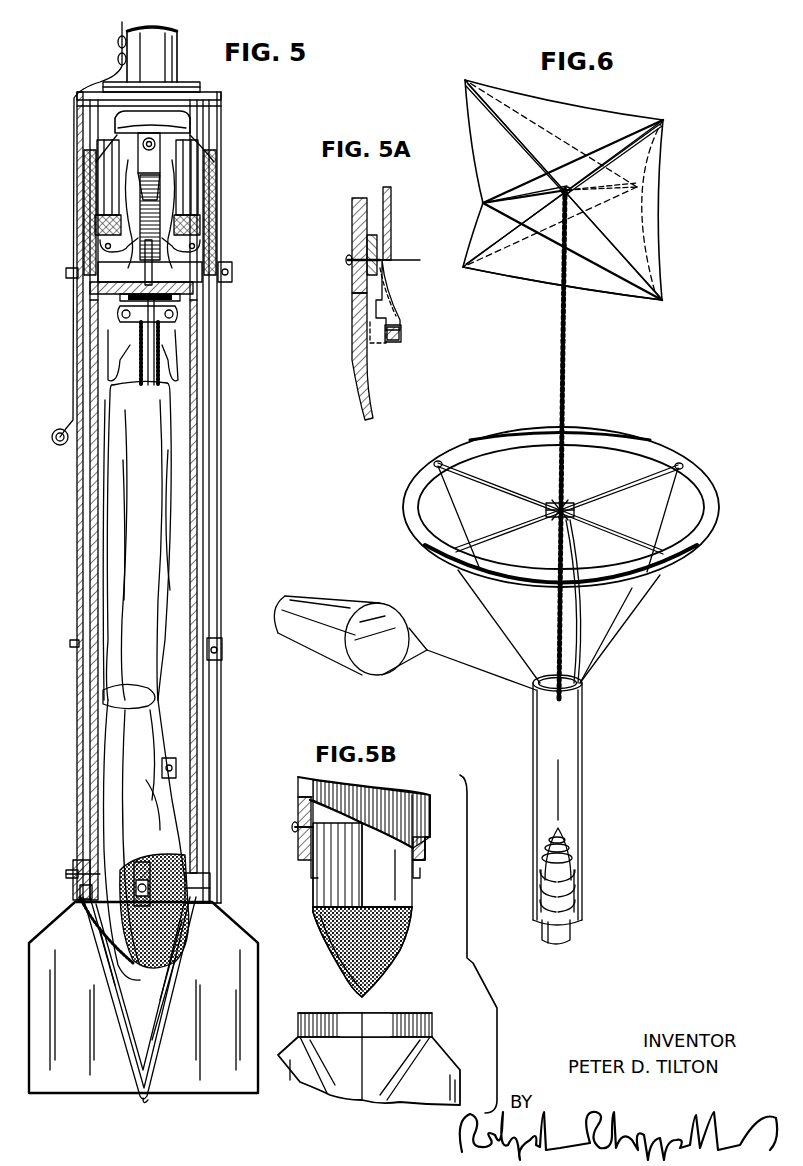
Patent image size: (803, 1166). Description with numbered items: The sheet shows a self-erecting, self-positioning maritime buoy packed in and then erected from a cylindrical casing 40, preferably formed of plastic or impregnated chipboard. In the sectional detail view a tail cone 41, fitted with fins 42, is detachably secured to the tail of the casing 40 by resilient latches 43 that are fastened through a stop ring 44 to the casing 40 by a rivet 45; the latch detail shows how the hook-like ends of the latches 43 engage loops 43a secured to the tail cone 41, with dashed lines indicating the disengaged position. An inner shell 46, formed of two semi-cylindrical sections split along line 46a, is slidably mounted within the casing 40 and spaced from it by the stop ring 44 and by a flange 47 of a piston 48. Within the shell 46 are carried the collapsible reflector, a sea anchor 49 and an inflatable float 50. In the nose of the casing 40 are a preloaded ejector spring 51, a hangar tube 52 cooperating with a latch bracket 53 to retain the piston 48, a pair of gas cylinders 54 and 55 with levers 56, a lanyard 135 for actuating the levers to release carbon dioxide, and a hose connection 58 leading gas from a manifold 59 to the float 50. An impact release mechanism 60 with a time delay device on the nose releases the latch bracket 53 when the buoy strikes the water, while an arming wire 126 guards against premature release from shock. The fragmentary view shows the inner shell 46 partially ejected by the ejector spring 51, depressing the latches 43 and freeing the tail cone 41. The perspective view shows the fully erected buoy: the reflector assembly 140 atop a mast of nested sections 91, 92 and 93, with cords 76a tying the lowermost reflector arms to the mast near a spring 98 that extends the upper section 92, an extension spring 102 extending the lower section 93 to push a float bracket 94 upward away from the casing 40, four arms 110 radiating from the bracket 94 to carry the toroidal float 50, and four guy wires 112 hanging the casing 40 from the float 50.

In FIG. 5, the cylindrical casing 40 is at (78, 490).
In FIG. 6, the cylindrical casing 40 is at (583, 736).
In FIG. 5B, the cylindrical casing 40 is at (432, 822).
In FIG. 5, the tail cone 41 is at (97, 938).
In FIG. 5A, the tail cone 41 is at (352, 323).
In FIG. 5B, the tail cone 41 is at (425, 1046).
In FIG. 5, the fins 42 is at (100, 1077).
In FIG. 5B, the fins 42 is at (450, 1060).
In FIG. 5, the latches 43 is at (84, 900).
In FIG. 5A, the latches 43 is at (398, 300).
In FIG. 5B, the latches 43 is at (308, 878).
In FIG. 5A, the loops 43a is at (401, 335).
In FIG. 5, the stop ring 44 is at (78, 860).
In FIG. 5A, the stop ring 44 is at (352, 212).
In FIG. 5B, the stop ring 44 is at (298, 848).
In FIG. 5, the rivet 45 is at (72, 870).
In FIG. 5A, the rivet 45 is at (346, 260).
In FIG. 5B, the rivet 45 is at (293, 827).
In FIG. 5, the inner shell 46 is at (92, 591).
In FIG. 5A, the inner shell 46 is at (387, 198).
In FIG. 5B, the inner shell 46 is at (414, 903).
In FIG. 5B, the split line 46a is at (362, 880).
In FIG. 5, the flange 47 is at (90, 296).
In FIG. 5, the piston 48 is at (188, 292).
In FIG. 5, the sea anchor 49 is at (118, 737).
In FIG. 6, the sea anchor 49 is at (332, 655).
In FIG. 5B, the sea anchor 49 is at (330, 935).
In FIG. 5, the inflatable float 50 is at (152, 442).
In FIG. 6, the inflatable float 50 is at (712, 500).
In FIG. 5, the ejector spring 51 is at (210, 202).
In FIG. 6, the ejector spring 51 is at (575, 845).
In FIG. 5, the hangar tube 52 is at (160, 270).
In FIG. 5, the latch bracket 53 is at (160, 136).
In FIG. 5, the gas cylinder 54 is at (108, 185).
In FIG. 6, the gas cylinder 54 is at (538, 908).
In FIG. 5, the gas cylinder 55 is at (196, 186).
In FIG. 6, the gas cylinder 55 is at (576, 893).
In FIG. 5, the levers 56 is at (100, 252).
In FIG. 5, the hose connection 58 is at (128, 348).
In FIG. 6, the hose connection 58 is at (578, 620).
In FIG. 5, the manifold 59 is at (200, 160).
In FIG. 5, the impact release mechanism 60 is at (172, 44).
In FIG. 6, the impact release mechanism 60 is at (571, 935).
In FIG. 6, the cords 76a is at (510, 275).
In FIG. 6, the center mast section 91 is at (566, 380).
In FIG. 6, the upper mast section 92 is at (568, 312).
In FIG. 6, the lower mast section 93 is at (555, 608).
In FIG. 5, the float bracket 94 is at (122, 322).
In FIG. 6, the float bracket 94 is at (548, 496).
In FIG. 6, the spring 98 is at (564, 285).
In FIG. 6, the extension spring 102 is at (556, 632).
In FIG. 6, the arms 110 is at (648, 475).
In FIG. 6, the guy wires 112 is at (622, 637).
In FIG. 5, the arming wire 126 is at (75, 72).
In FIG. 5, the lanyard 135 is at (128, 160).
In FIG. 6, the reflector assembly 140 is at (672, 199).